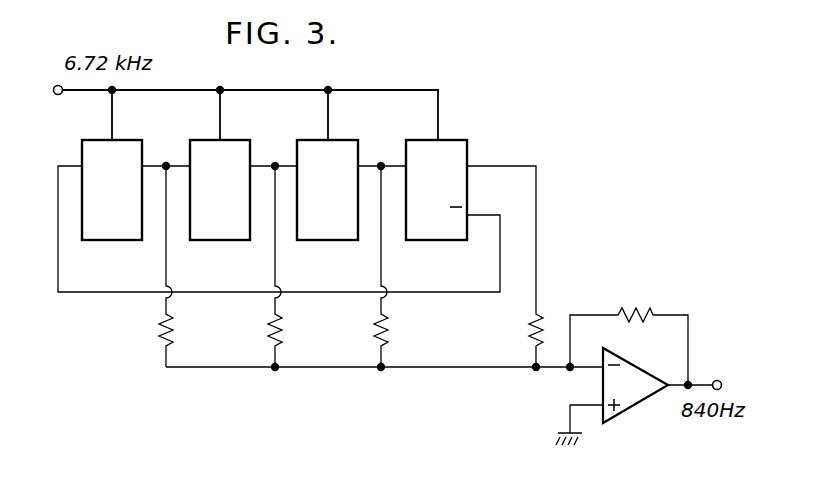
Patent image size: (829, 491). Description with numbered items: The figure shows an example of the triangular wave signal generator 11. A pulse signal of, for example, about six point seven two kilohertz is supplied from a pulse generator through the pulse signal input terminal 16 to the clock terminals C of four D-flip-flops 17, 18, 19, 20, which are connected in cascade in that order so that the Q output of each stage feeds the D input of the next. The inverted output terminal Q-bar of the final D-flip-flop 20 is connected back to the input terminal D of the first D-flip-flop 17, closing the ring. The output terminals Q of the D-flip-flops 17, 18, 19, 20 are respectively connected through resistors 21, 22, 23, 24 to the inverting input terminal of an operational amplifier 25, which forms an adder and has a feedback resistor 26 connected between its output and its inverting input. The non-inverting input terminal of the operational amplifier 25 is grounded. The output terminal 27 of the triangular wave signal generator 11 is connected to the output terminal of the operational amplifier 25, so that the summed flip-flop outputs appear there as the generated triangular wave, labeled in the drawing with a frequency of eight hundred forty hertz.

The triangular wave signal generator 11 is at (492, 88).
The pulse signal input terminal 16 is at (58, 95).
The D-flip-flop 17 is at (110, 241).
The D-flip-flop 18 is at (218, 241).
The D-flip-flop 19 is at (325, 241).
The D-flip-flop 20 is at (436, 241).
The resistor 21 is at (160, 331).
The resistor 22 is at (269, 331).
The resistor 23 is at (375, 331).
The resistor 24 is at (527, 331).
The operational amplifier 25 is at (634, 408).
The feedback resistor 26 is at (635, 310).
The output terminal 27 is at (719, 380).